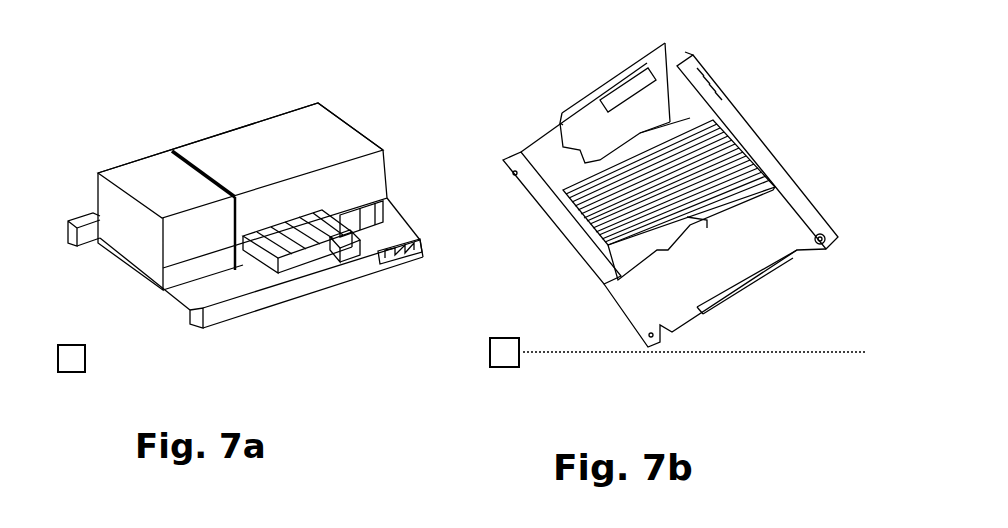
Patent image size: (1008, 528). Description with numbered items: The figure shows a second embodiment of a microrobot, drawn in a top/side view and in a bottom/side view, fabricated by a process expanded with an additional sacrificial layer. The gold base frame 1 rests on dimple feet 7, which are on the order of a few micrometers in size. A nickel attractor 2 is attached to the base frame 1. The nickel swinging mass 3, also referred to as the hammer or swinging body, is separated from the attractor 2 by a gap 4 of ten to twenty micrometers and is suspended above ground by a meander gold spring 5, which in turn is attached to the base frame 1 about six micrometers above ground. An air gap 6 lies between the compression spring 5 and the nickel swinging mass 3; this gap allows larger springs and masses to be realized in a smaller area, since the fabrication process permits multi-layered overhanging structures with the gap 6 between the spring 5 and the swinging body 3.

In FIG. 7A, the base frame 1 is at (356, 274).
In FIG. 7B, the base frame 1 is at (603, 280).
In FIG. 7A, the attractor 2 is at (153, 167).
In FIG. 7A, the swinging mass 3 is at (315, 118).
In FIG. 7B, the swinging mass 3 is at (575, 99).
In FIG. 7A, the gap 4 is at (191, 163).
In FIG. 7A, the meander gold spring 5 is at (351, 242).
In FIG. 7B, the meander gold spring 5 is at (586, 209).
In FIG. 7A, the air gap 6 is at (318, 223).
In FIG. 7B, the air gap 6 is at (656, 136).
In FIG. 7B, the dimple feet 7 is at (824, 248).